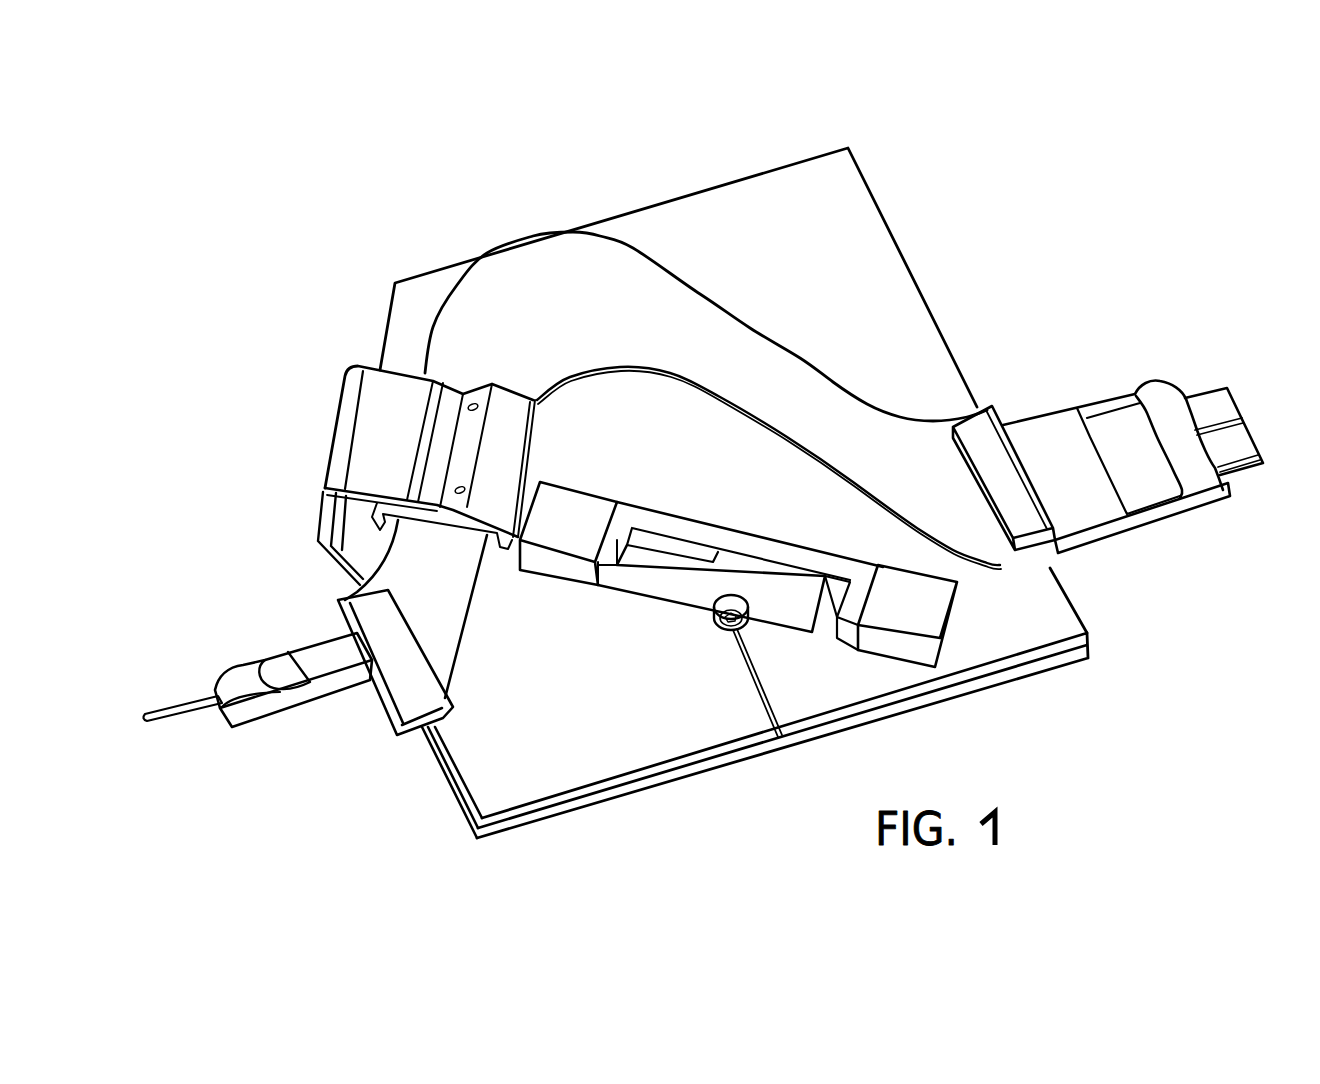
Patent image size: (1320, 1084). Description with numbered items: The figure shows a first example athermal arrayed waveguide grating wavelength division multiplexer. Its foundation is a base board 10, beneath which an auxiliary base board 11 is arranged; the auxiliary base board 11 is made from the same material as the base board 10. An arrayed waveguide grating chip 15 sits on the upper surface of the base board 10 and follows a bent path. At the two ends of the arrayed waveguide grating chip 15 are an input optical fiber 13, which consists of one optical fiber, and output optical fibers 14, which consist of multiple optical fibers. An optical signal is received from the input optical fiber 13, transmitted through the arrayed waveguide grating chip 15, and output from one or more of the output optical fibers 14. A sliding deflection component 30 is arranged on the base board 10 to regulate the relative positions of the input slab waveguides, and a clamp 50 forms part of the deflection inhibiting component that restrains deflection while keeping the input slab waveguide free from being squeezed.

The base board 10 is at (862, 263).
The auxiliary base board 11 is at (672, 772).
The input optical fiber 13 is at (198, 698).
The output optical fibers 14 is at (1212, 405).
The arrayed waveguide grating chip 15 is at (460, 236).
The sliding deflection component 30 is at (704, 495).
The clamp 50 is at (369, 421).